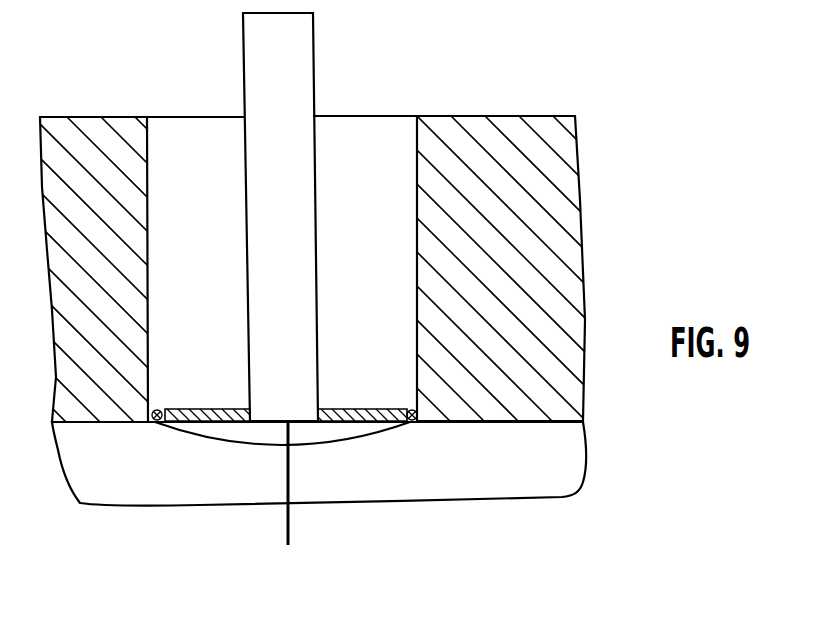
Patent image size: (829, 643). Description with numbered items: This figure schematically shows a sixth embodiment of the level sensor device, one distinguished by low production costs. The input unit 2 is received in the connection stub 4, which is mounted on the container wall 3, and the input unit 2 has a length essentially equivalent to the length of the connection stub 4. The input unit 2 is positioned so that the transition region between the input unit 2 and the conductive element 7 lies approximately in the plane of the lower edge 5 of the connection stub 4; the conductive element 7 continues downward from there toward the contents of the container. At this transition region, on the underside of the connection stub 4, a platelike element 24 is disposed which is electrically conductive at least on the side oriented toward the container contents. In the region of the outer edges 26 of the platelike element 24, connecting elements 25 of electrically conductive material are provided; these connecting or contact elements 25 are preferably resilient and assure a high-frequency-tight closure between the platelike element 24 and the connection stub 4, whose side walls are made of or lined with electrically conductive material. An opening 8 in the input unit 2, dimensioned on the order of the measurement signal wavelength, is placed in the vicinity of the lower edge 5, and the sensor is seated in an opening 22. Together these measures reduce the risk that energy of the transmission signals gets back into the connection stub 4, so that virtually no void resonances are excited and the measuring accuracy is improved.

The input unit 2 is at (305, 48).
The container wall 3 is at (557, 203).
The connection stub 4 is at (146, 199).
The lower edge 5 is at (497, 423).
The conductive element 7 is at (293, 520).
The opening 8 is at (300, 422).
The opening 22 is at (265, 428).
The platelike element 24 is at (337, 410).
The connecting elements 25 is at (157, 411).
The outer edges 26 is at (177, 425).